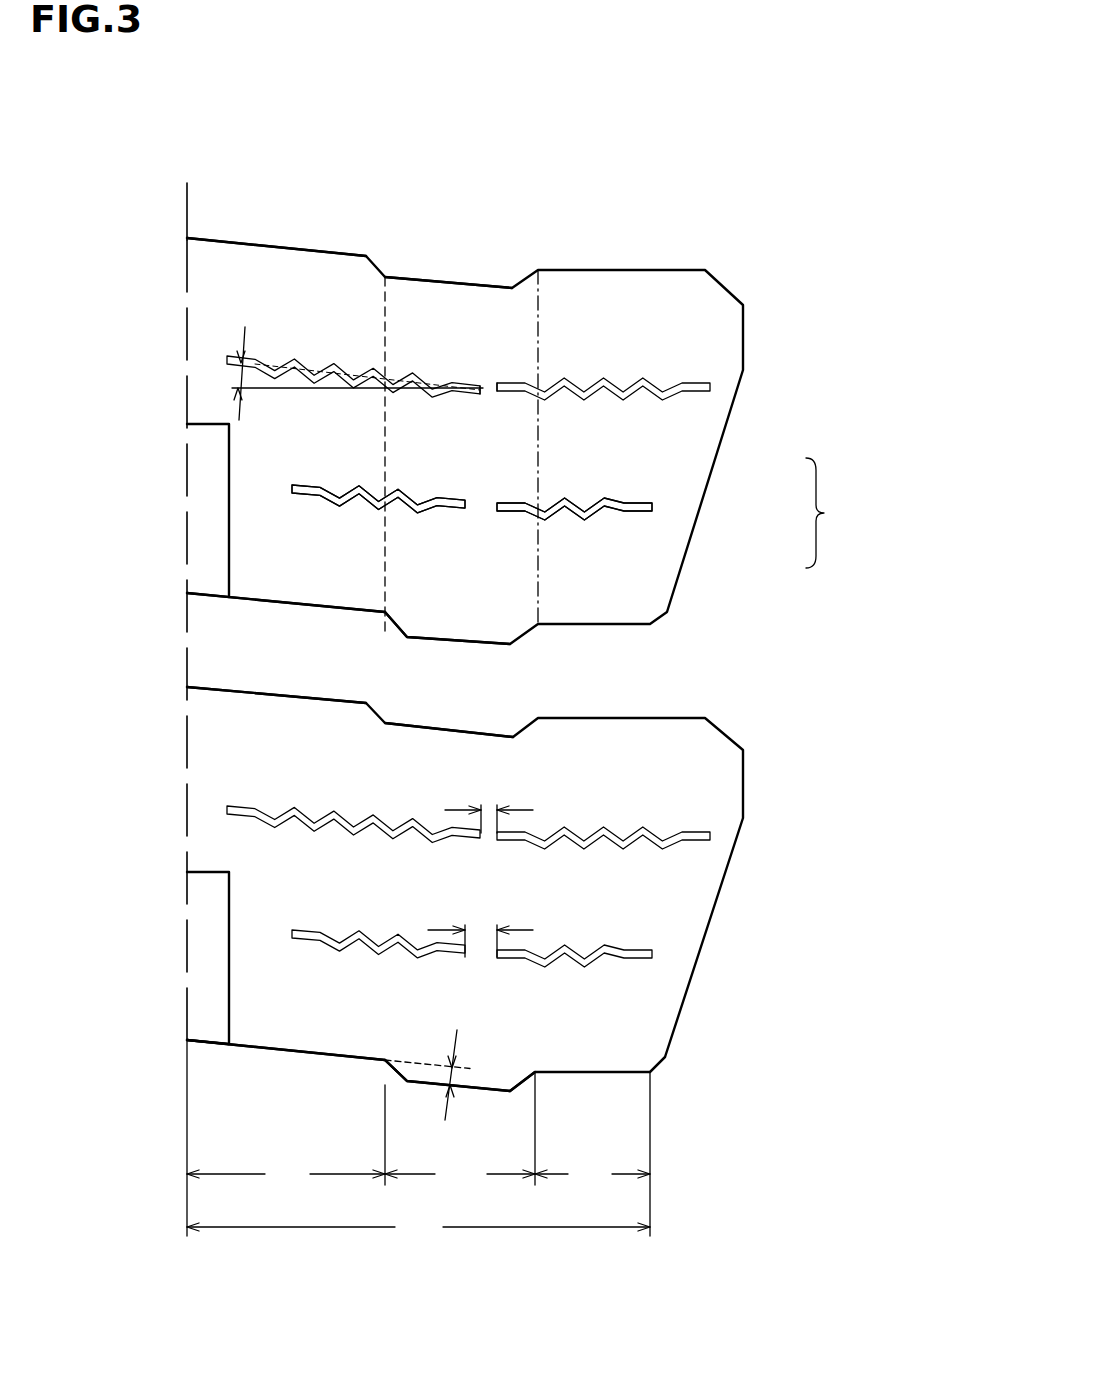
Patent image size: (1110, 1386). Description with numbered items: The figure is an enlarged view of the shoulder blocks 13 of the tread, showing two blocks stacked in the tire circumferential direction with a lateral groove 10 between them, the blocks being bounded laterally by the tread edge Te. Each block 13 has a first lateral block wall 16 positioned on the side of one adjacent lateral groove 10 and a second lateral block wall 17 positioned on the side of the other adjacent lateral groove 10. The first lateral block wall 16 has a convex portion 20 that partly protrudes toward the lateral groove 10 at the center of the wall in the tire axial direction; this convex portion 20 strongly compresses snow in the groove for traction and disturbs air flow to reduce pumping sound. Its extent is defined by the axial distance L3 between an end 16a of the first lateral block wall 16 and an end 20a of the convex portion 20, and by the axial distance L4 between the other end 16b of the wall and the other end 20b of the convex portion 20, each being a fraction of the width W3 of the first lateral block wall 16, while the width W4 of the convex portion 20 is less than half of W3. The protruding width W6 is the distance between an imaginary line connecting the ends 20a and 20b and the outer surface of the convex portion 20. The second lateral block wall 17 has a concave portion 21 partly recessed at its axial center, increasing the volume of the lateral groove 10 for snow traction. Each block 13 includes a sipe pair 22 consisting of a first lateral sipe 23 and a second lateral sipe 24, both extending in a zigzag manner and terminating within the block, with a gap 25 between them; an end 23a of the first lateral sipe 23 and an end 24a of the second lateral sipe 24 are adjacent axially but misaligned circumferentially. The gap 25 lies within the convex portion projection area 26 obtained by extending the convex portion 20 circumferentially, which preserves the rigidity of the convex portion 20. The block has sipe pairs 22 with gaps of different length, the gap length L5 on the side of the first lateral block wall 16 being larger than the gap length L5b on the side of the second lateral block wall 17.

The lateral groove 10 is at (305, 650).
The shoulder block 13 is at (486, 444).
The first lateral block wall 16 is at (275, 606).
The end on one side of the first lateral block wall 16a is at (652, 1075).
The end on the other side of the first lateral block wall 16b is at (187, 1040).
The second lateral block wall 17 is at (290, 243).
The convex portion 20 is at (459, 642).
The end on one side of the convex portion 20a is at (537, 1072).
The end on the other side of the convex portion 20b is at (393, 1062).
The concave portion 21 is at (453, 281).
The sipe pair 22 is at (580, 513).
The first lateral sipe 23 is at (607, 505).
The end of the first lateral sipe 23a is at (490, 392).
The second lateral sipe 24 is at (420, 500).
The end of the second lateral sipe 24a is at (482, 392).
The gap 25 is at (483, 500).
The convex portion projection area 26 is at (420, 452).
The tread edge Te is at (187, 594).
The distance between end 16a and end 20a L3 is at (592, 1174).
The distance between end 16b and end 20b L4 is at (286, 1137).
The width of the first lateral block wall W3 is at (418, 1141).
The width of the convex portion W4 is at (460, 1130).
The protruding width of the convex portion W6 is at (455, 1073).
The length of the gap L5 is at (498, 925).
The length of the gap on the second lateral block wall side L5b is at (484, 806).